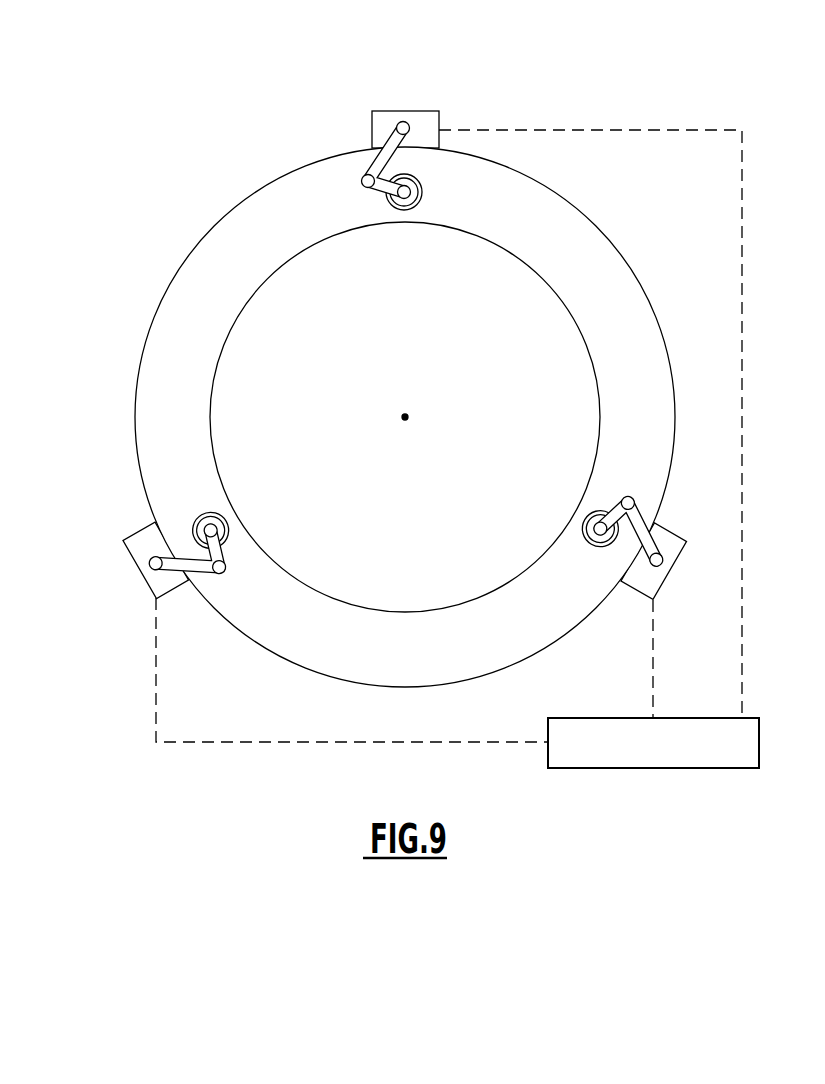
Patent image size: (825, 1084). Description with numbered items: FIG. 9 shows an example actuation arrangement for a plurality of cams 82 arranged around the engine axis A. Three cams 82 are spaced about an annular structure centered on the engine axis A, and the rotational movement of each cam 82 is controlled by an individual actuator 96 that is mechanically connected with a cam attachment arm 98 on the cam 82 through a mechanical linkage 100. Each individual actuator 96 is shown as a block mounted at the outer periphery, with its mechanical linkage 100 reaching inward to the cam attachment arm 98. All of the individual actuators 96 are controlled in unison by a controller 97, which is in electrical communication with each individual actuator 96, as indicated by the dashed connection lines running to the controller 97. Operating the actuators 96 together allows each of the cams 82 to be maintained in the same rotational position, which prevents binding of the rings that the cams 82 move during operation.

The cam 82 is at (437, 361).
The individual actuator 96 is at (425, 110).
The controller 97 is at (624, 768).
The cam attachment arm 98 is at (408, 196).
The mechanical linkage 100 is at (375, 167).
The engine axis A is at (405, 417).